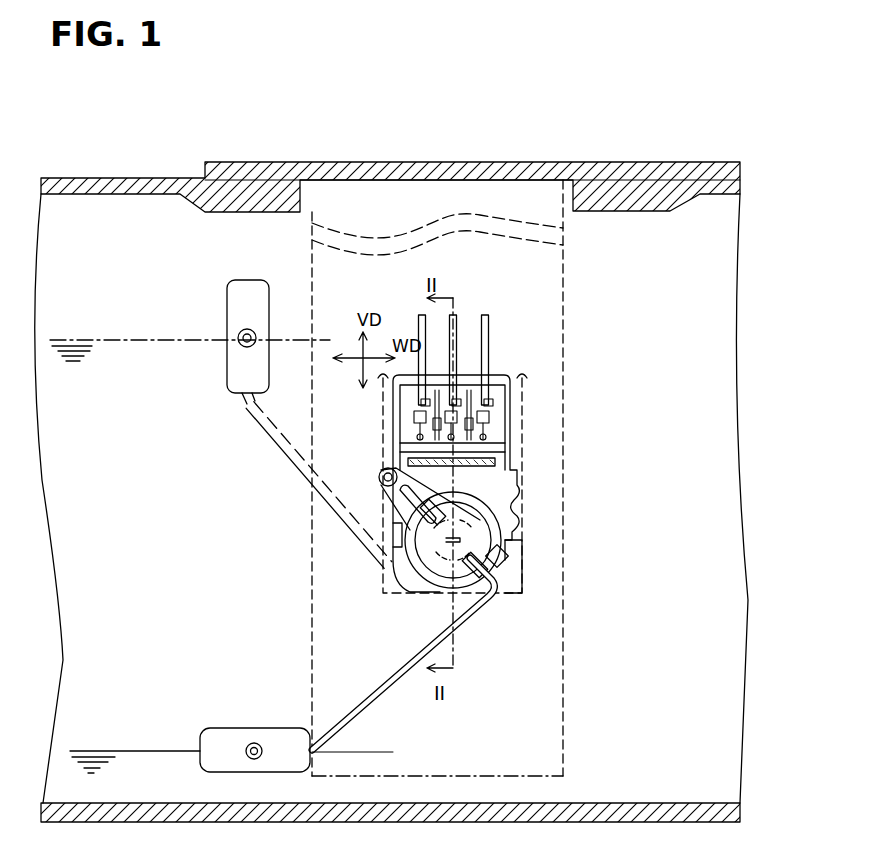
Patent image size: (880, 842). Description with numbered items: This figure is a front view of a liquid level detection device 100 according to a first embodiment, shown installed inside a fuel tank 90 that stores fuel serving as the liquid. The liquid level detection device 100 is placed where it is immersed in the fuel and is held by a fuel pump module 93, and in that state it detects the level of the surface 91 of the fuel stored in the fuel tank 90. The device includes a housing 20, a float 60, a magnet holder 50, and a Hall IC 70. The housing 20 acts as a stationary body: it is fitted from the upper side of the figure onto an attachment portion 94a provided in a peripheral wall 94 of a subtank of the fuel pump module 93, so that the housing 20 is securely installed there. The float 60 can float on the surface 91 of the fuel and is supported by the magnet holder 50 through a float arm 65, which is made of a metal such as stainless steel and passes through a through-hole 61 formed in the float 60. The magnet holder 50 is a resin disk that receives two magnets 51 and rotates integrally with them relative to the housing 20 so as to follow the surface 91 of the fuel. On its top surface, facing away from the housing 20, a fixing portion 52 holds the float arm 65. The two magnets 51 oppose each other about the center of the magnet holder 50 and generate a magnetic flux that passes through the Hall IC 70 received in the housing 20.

The fuel tank 90 is at (86, 178).
The surface of the fuel 91 is at (78, 340).
The fuel pump module 93 is at (577, 275).
The attachment portion 94a is at (543, 483).
The peripheral wall 94 is at (524, 438).
The liquid level detection device 100 is at (439, 436).
The housing 20 is at (512, 400).
The magnet holder 50 is at (505, 542).
The magnet 51 is at (495, 520).
The fixing portion 52 is at (506, 566).
The Hall IC 70 is at (395, 565).
The float arm 65 is at (478, 612).
The float 60 is at (262, 728).
The through-hole 61 is at (246, 750).